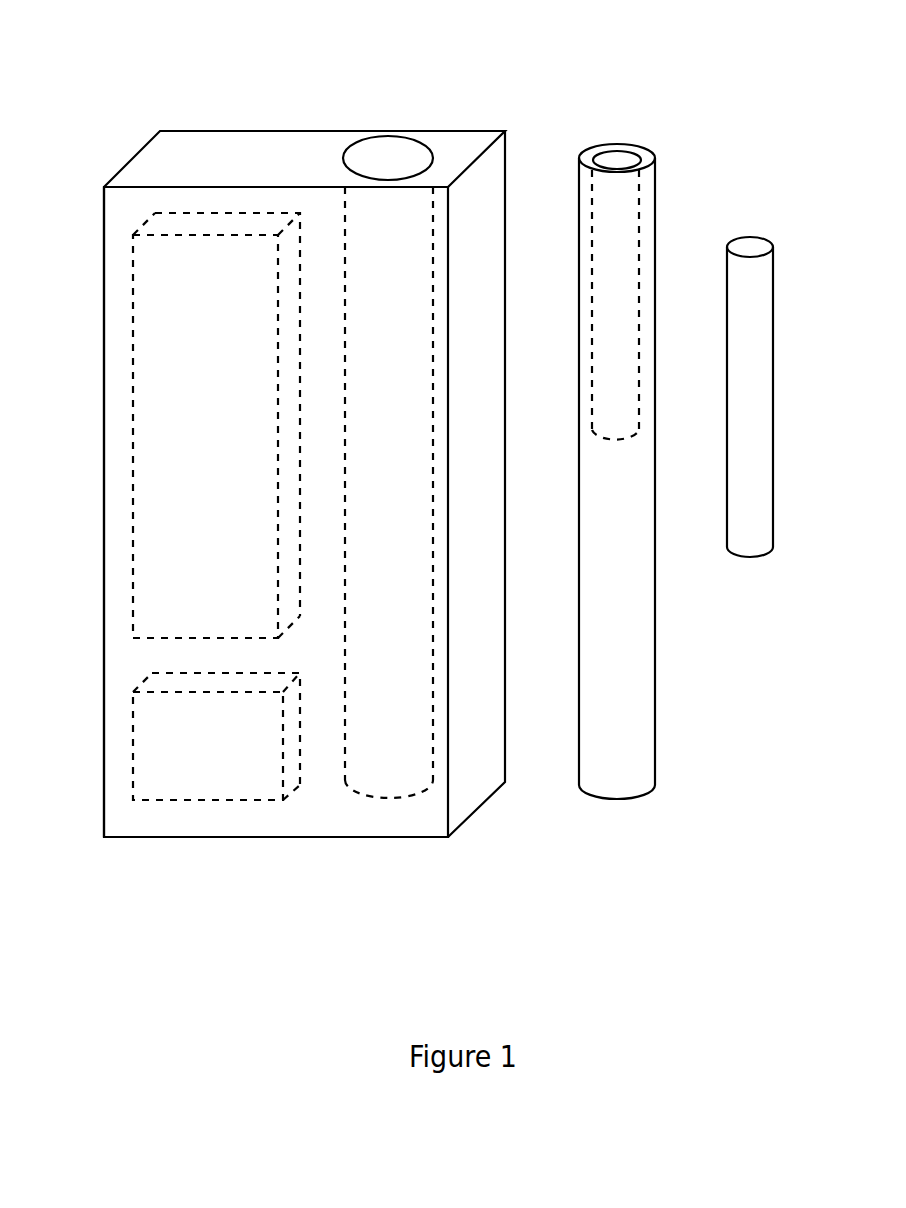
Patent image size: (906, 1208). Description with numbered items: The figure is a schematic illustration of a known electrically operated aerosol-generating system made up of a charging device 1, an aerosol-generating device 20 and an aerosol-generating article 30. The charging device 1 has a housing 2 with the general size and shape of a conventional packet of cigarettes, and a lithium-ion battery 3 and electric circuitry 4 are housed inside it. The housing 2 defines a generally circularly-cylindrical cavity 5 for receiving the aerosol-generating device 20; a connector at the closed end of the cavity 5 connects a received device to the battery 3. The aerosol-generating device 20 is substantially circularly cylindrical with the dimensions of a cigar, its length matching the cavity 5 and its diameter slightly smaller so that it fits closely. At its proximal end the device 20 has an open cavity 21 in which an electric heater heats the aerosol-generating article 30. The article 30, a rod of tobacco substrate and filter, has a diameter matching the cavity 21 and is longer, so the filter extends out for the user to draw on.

The charging device 1 is at (302, 893).
The housing 2 is at (124, 232).
The lithium-ion battery 3 is at (185, 469).
The electric circuitry 4 is at (183, 738).
The cavity 5 is at (388, 162).
The aerosol-generating device 20 is at (616, 860).
The open cavity 21 is at (616, 163).
The aerosol-generating article 30 is at (755, 662).